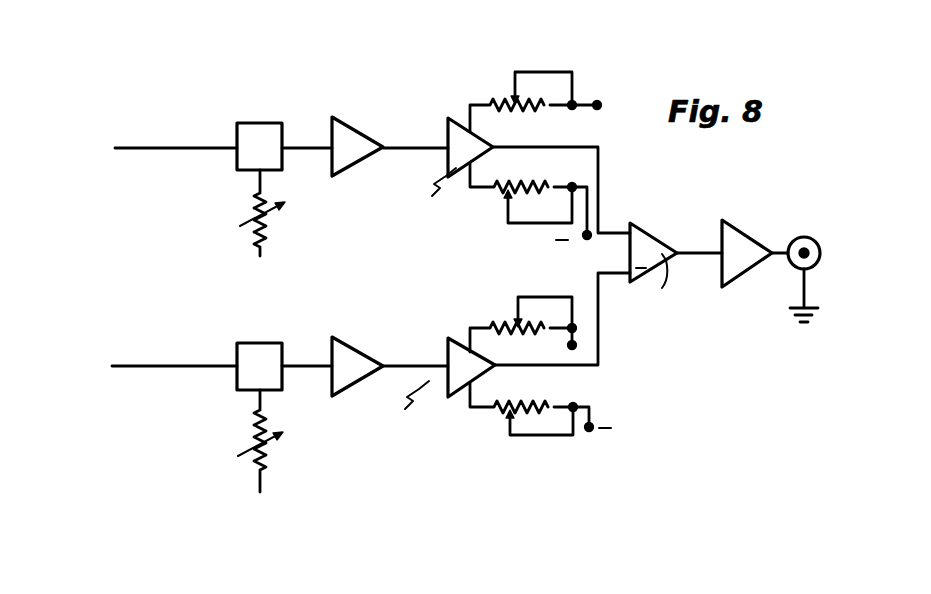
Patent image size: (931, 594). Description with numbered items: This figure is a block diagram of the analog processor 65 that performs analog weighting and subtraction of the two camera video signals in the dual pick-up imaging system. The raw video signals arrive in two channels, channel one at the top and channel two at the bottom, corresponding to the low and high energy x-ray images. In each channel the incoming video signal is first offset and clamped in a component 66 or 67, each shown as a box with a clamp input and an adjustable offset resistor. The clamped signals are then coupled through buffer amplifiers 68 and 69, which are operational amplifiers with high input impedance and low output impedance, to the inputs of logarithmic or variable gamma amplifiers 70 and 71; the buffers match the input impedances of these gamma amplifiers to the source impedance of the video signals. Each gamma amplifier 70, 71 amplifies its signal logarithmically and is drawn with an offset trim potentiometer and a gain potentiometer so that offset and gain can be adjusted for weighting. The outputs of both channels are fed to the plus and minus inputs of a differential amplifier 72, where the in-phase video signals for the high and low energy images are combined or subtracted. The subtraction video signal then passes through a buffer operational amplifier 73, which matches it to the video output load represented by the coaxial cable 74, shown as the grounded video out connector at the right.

The analog processor 65 is at (412, 494).
The offset and clamp component 66 is at (268, 108).
The offset and clamp component 67 is at (277, 337).
The buffer amplifier 68 is at (352, 131).
The buffer amplifier 69 is at (343, 344).
The variable gamma amplifier 70 is at (452, 163).
The variable gamma amplifier 71 is at (452, 350).
The differential amplifier 72 is at (662, 229).
The buffer operational amplifier 73 is at (735, 234).
The coaxial cable 74 is at (805, 237).